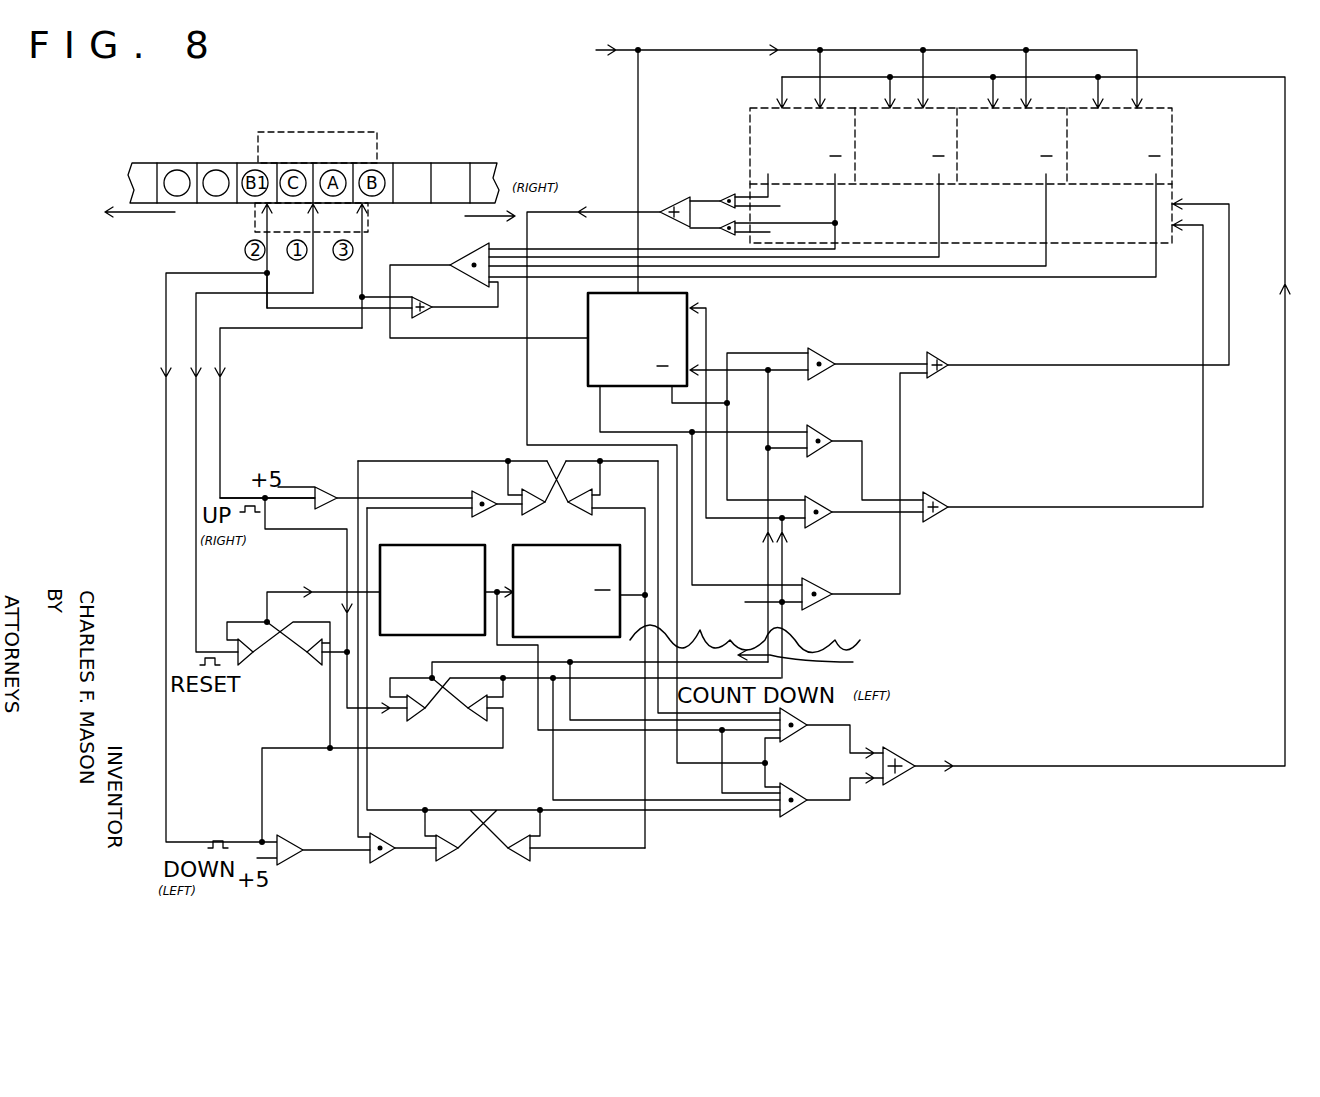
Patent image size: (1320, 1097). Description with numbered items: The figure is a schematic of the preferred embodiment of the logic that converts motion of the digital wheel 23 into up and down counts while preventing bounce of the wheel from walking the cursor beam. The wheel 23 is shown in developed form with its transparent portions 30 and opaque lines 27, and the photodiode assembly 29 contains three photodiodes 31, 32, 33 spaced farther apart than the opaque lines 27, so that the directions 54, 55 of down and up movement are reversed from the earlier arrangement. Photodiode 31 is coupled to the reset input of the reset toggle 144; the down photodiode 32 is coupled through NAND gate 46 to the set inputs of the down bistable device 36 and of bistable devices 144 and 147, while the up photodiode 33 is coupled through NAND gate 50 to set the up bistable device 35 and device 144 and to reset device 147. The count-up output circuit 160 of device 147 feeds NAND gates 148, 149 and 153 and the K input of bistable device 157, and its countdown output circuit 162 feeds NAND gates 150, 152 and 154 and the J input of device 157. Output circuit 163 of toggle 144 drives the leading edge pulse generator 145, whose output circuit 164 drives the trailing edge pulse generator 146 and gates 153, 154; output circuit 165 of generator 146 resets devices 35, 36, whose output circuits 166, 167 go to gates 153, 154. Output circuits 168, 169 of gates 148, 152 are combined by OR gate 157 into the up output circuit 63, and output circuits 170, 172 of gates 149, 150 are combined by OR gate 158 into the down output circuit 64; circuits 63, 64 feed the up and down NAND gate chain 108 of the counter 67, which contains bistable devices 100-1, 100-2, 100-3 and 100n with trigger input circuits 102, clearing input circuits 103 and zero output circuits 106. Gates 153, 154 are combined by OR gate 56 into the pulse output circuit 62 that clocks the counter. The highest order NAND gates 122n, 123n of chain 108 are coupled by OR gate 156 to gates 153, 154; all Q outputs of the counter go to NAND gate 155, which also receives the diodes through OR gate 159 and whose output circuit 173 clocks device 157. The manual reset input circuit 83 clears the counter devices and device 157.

The digital wheel 23 is at (430, 160).
The opaque lines 27 is at (157, 176).
The photodiode assembly 29 is at (315, 130).
The transparent portions 30 is at (192, 167).
The photodiode 31 is at (327, 248).
The photodiode 32 is at (258, 230).
The photodiode 33 is at (368, 212).
The up bistable device 35 is at (572, 436).
The down bistable device 36 is at (483, 858).
The NAND gate 46 is at (380, 866).
The NAND gate 50 is at (474, 492).
The down direction 54 is at (107, 236).
The up direction 55 is at (462, 217).
The OR gate 56 is at (892, 750).
The pulse output circuit 62 is at (1040, 762).
The up output circuit 63 is at (992, 362).
The down output circuit 64 is at (985, 500).
The counter 67 is at (995, 175).
The manual reset input circuit 83 is at (608, 50).
The bistable device 100n is at (802, 144).
The bistable device 100-3 is at (907, 144).
The bistable device 100-2 is at (1012, 144).
The bistable device 100-1 is at (1121, 144).
The trigger signal input circuit 102 is at (1093, 95).
The clearing input circuit 103 is at (1140, 97).
The zero output circuit 106 is at (1158, 206).
The up and down NAND gate chain 108 is at (1065, 245).
The NAND gate 122n is at (725, 192).
The NAND gate 123n is at (728, 237).
The reset toggle 144 is at (285, 663).
The leading edge pulse generator 145 is at (433, 542).
The trailing edge pulse generator 146 is at (577, 555).
The bistable device 147 is at (445, 720).
The NAND gate 148 is at (812, 350).
The NAND gate 149 is at (812, 427).
The NAND gate 150 is at (816, 496).
The NAND gate 152 is at (812, 578).
The NAND gate 153 is at (831, 740).
The NAND gate 154 is at (806, 815).
The NAND gate 155 is at (460, 270).
The OR gate 156 is at (675, 205).
The bistable device 157 is at (588, 295).
The OR gate 158 is at (935, 492).
The OR gate 159 is at (428, 317).
The count-up output circuit 160 is at (754, 600).
The countdown output circuit 162 is at (780, 647).
The output circuit 163 is at (274, 590).
The output circuit 164 is at (490, 578).
The output circuit 165 is at (620, 629).
The output circuit 166 is at (660, 542).
The output circuit 167 is at (620, 860).
The output circuit 168 is at (860, 363).
The output circuit 169 is at (865, 600).
The output circuit 170 is at (865, 462).
The output circuit 172 is at (840, 516).
The output circuit 173 is at (415, 342).